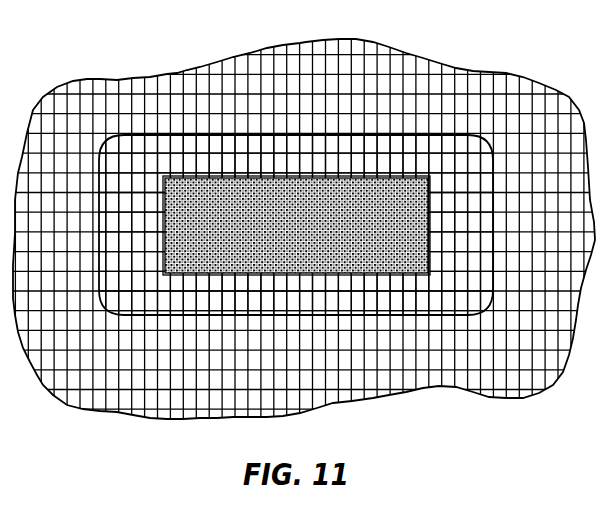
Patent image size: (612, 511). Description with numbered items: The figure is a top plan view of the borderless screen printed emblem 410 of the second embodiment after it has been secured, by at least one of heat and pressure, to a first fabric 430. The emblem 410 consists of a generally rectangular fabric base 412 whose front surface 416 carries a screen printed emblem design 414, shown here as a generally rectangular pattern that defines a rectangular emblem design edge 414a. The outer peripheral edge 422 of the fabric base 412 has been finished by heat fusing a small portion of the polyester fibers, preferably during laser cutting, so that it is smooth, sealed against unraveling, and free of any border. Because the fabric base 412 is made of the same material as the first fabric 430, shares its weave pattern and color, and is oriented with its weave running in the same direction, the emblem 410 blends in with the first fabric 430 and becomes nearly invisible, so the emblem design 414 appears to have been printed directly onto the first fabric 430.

The emblem 410 is at (165, 322).
The fabric base 412 is at (308, 152).
The emblem design 414 is at (293, 300).
The emblem design edge 414a is at (428, 217).
The front surface 416 is at (343, 147).
The outer peripheral edge 422 is at (319, 314).
The first fabric 430 is at (222, 83).